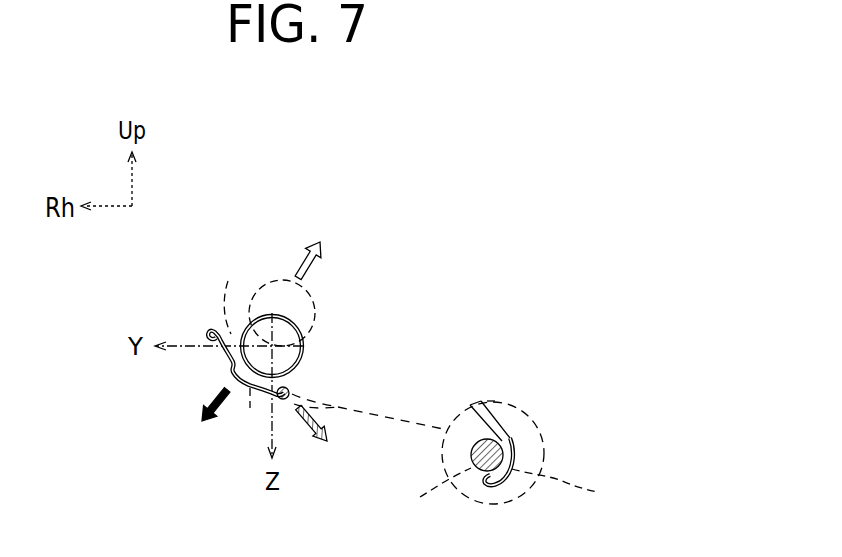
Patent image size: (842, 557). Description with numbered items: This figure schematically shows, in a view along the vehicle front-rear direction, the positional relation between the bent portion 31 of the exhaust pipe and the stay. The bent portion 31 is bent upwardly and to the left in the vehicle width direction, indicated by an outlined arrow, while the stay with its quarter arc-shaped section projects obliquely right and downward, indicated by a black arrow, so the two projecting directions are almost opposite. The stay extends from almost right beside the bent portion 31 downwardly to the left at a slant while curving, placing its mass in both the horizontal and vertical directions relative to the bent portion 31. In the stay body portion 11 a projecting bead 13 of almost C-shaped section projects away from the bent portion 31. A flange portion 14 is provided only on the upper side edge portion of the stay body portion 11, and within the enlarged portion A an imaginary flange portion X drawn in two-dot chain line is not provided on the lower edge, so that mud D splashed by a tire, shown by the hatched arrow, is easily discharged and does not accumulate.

The stay body portion 11 is at (214, 340).
The projecting bead 13 is at (248, 408).
The flange portion 14 is at (218, 332).
The bent portion 31 is at (290, 285).
The mud D is at (298, 378).
The portion A is at (540, 426).
The flange portion X is at (566, 489).